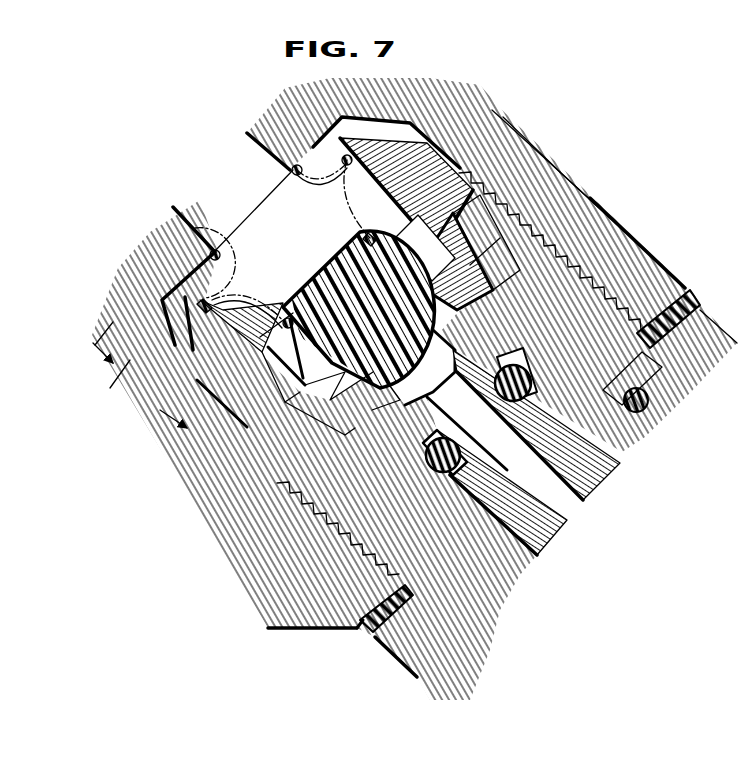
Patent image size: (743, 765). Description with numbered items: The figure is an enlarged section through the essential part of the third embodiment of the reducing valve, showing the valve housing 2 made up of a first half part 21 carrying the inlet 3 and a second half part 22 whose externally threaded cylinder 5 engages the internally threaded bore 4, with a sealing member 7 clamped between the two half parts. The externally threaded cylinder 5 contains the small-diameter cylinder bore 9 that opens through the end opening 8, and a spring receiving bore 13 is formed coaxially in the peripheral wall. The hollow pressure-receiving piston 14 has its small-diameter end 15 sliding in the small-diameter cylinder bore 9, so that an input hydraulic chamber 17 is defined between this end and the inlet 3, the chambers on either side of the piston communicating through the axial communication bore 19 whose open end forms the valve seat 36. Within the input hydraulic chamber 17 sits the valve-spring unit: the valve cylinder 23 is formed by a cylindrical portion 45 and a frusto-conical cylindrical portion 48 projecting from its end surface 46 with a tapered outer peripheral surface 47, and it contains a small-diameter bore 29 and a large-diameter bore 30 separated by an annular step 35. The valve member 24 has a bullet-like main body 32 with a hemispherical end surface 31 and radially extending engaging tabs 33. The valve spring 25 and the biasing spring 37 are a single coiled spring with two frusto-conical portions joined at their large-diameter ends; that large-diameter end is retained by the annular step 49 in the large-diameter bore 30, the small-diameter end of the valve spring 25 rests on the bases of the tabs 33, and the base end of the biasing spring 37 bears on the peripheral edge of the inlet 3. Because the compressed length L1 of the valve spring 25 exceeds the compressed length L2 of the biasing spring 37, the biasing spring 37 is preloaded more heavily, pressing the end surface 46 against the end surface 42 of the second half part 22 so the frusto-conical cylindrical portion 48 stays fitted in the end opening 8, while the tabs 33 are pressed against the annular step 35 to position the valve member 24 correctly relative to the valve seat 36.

The valve housing 2 is at (703, 378).
The inlet 3 is at (215, 236).
The internally threaded bore 4 is at (506, 212).
The externally threaded cylinder 5 is at (540, 243).
The sealing member 7 is at (362, 630).
The end opening 8 is at (455, 228).
The small-diameter cylinder bore 9 is at (510, 363).
The spring receiving bore 13 is at (640, 410).
The pressure-receiving piston 14 is at (555, 548).
The small-diameter end 15 is at (402, 430).
The input hydraulic chamber 17 is at (284, 228).
The communication bore 19 is at (572, 486).
The first half part 21 is at (293, 628).
The second half part 22 is at (615, 390).
The valve cylinder 23 is at (378, 135).
The valve member 24 is at (335, 262).
The valve spring 25 is at (312, 160).
The small-diameter bore 29 is at (380, 405).
The large-diameter bore 30 is at (406, 194).
The hemispherical end surface 31 is at (451, 261).
The main body 32 is at (312, 292).
The engaging tabs 33 is at (437, 242).
The annular step 35 is at (339, 388).
The valve seat 36 is at (481, 409).
The biasing spring 37 is at (205, 282).
The end surface 42 is at (270, 410).
The cylindrical portion 45 is at (222, 418).
The end surface 46 is at (268, 462).
The tapered outer peripheral surface 47 is at (491, 250).
The frusto-conical cylindrical portion 48 is at (325, 428).
The annular step 49 is at (348, 160).
The length of the valve spring L1 is at (148, 394).
The length of the biasing spring L2 is at (101, 359).